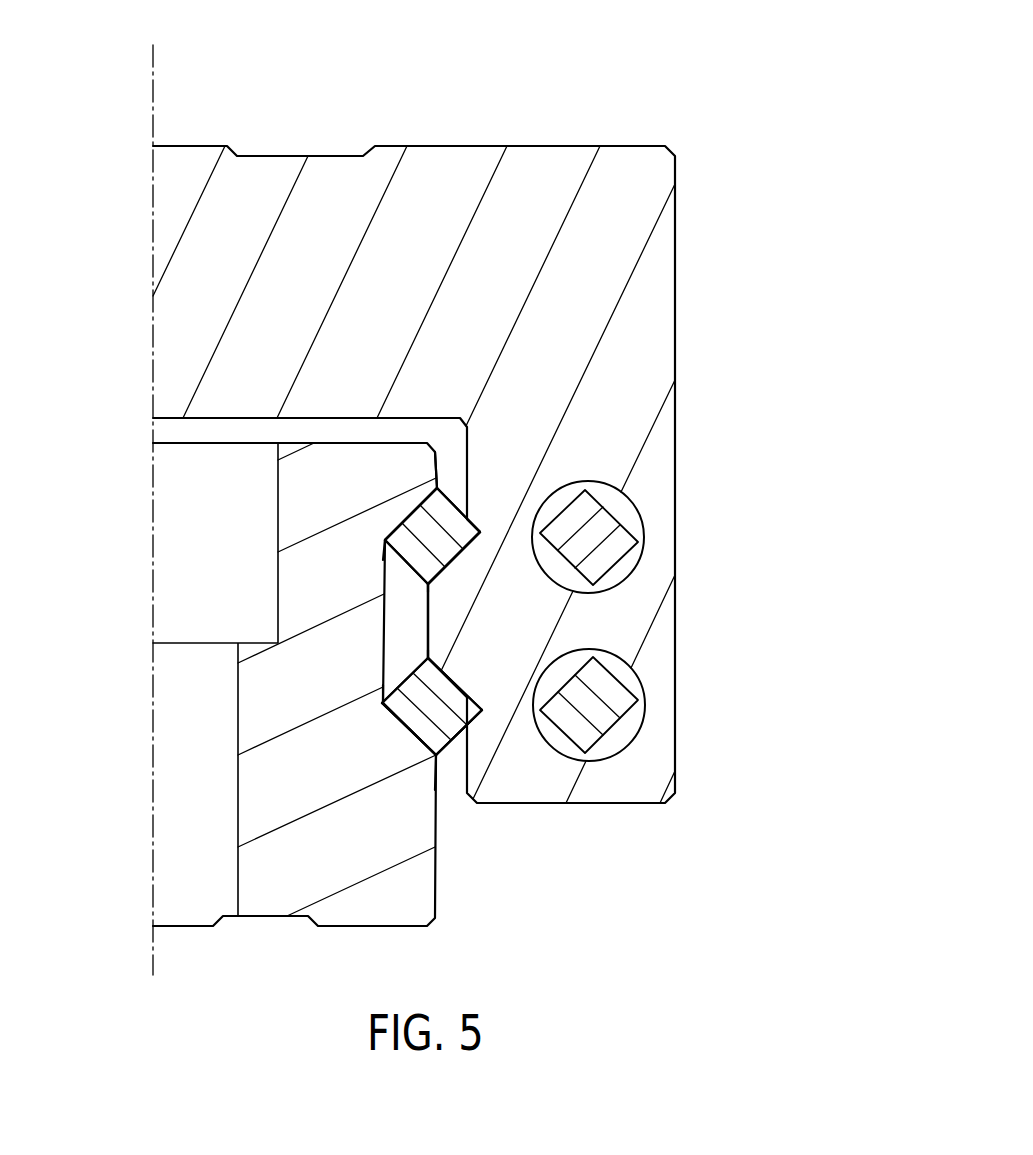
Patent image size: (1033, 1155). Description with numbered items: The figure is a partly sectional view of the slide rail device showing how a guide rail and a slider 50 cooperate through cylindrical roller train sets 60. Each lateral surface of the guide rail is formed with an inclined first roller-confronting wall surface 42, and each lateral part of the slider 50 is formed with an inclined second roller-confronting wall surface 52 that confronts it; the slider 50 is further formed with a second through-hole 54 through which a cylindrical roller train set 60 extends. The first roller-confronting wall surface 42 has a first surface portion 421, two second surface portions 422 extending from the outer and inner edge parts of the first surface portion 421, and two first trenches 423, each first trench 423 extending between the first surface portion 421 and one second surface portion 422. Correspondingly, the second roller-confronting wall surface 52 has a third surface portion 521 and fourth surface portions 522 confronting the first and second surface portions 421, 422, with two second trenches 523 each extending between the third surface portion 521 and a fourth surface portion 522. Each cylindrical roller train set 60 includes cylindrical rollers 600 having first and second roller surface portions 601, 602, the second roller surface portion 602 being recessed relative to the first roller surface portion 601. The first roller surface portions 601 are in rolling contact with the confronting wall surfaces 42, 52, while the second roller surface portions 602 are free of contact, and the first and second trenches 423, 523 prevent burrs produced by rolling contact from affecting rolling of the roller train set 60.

The first roller-confronting wall surface 42 is at (78, 725).
The first surface portion 421 is at (418, 498).
The second surface portion 422 is at (383, 692).
The first trench 423 is at (389, 712).
The slider 50 is at (684, 268).
The second roller-confronting wall surface 52 is at (787, 566).
The third surface portion 521 is at (434, 665).
The fourth surface portion 522 is at (472, 545).
The second trench 523 is at (436, 650).
The second through-hole 54 is at (600, 482).
The cylindrical roller train set 60 is at (620, 513).
The cylindrical roller 600 is at (464, 512).
The first roller surface portion 601 is at (468, 425).
The second roller surface portion 602 is at (418, 540).